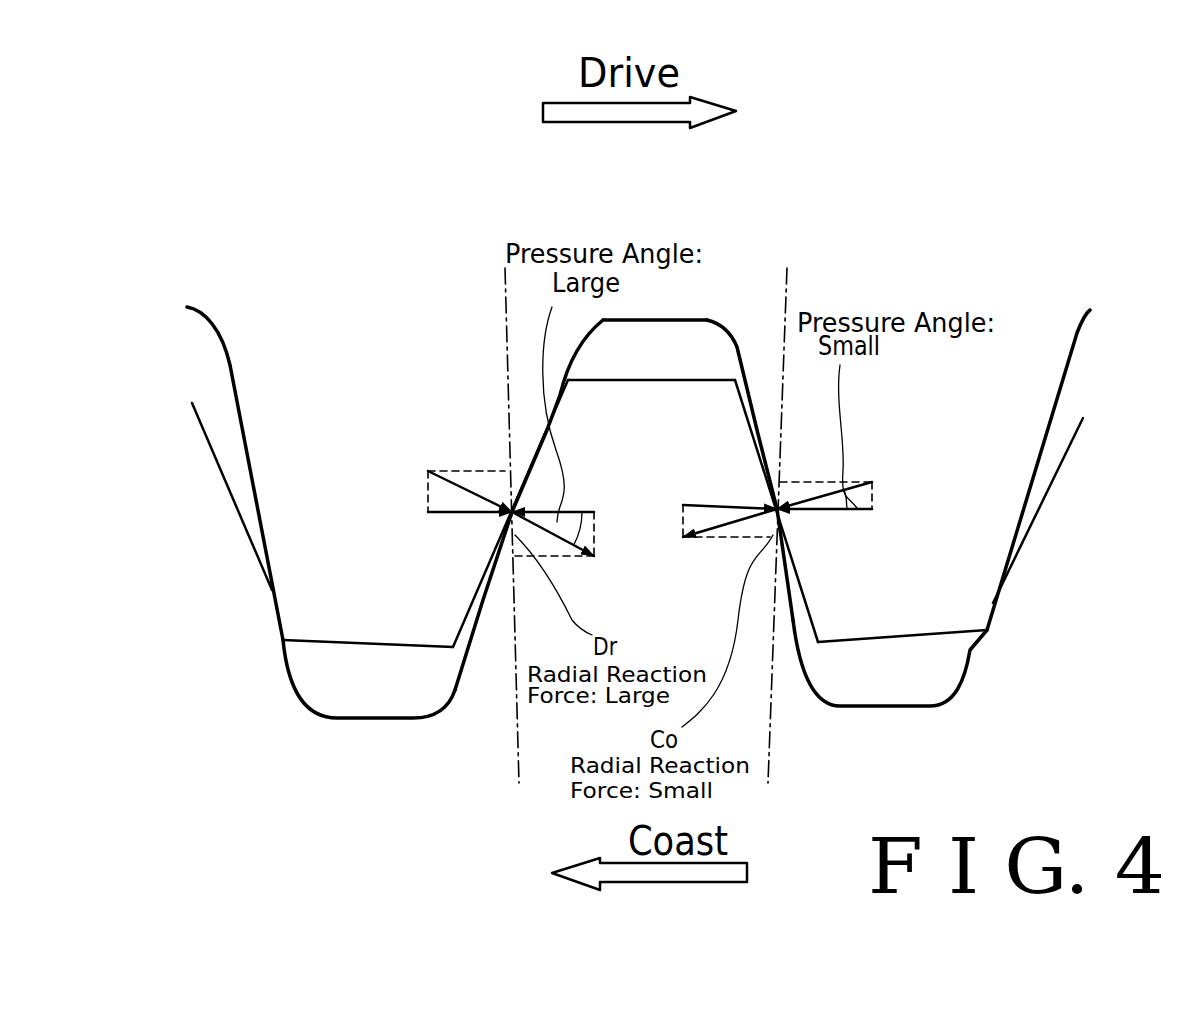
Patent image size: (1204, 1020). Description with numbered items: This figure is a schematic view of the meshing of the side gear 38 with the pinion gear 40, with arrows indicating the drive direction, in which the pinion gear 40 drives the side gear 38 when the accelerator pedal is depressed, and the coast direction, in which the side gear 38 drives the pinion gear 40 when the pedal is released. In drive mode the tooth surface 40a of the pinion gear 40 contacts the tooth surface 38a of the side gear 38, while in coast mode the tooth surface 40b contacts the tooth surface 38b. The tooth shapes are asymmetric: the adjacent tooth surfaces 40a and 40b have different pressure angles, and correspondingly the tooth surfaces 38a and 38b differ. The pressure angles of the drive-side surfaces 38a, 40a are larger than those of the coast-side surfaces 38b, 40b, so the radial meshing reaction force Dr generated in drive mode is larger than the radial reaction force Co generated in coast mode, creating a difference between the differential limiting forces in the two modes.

The side gear 38 is at (662, 444).
The tooth surface of the side gear 38a is at (472, 648).
The tooth surface of the side gear 38b is at (227, 483).
The pinion gear 40 is at (399, 445).
The tooth surface of the pinion gear 40a is at (467, 613).
The tooth surface of the pinion gear 40b is at (257, 517).